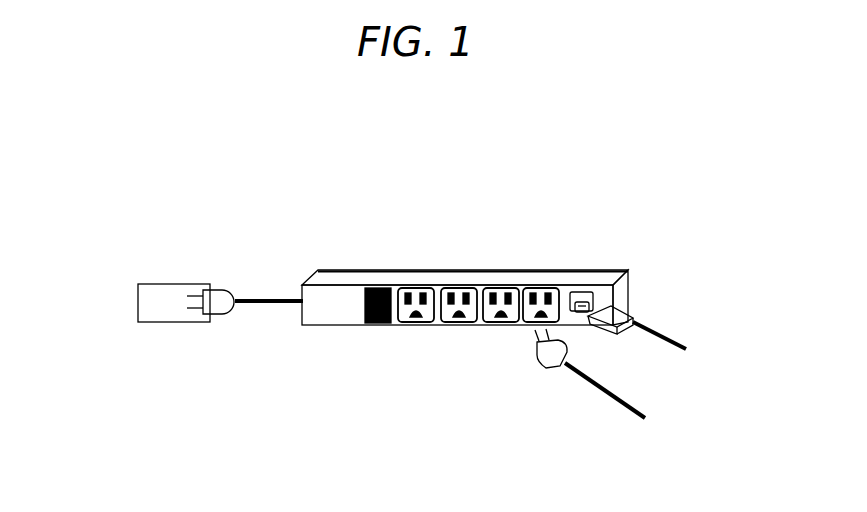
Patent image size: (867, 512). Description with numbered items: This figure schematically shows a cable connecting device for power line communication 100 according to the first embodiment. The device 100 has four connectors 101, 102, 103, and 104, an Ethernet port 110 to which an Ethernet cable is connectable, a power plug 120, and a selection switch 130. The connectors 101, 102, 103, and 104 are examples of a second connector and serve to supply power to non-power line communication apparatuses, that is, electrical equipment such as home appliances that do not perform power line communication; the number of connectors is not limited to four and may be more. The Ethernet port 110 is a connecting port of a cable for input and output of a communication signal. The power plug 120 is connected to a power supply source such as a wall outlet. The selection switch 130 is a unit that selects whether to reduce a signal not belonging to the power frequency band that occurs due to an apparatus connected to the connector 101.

The cable connecting device for power line communication 100 is at (262, 126).
The connector 101 is at (414, 293).
The connector 102 is at (458, 298).
The connector 103 is at (497, 297).
The connector 104 is at (542, 295).
The Ethernet port 110 is at (588, 296).
The power plug 120 is at (230, 294).
The selection switch 130 is at (362, 325).